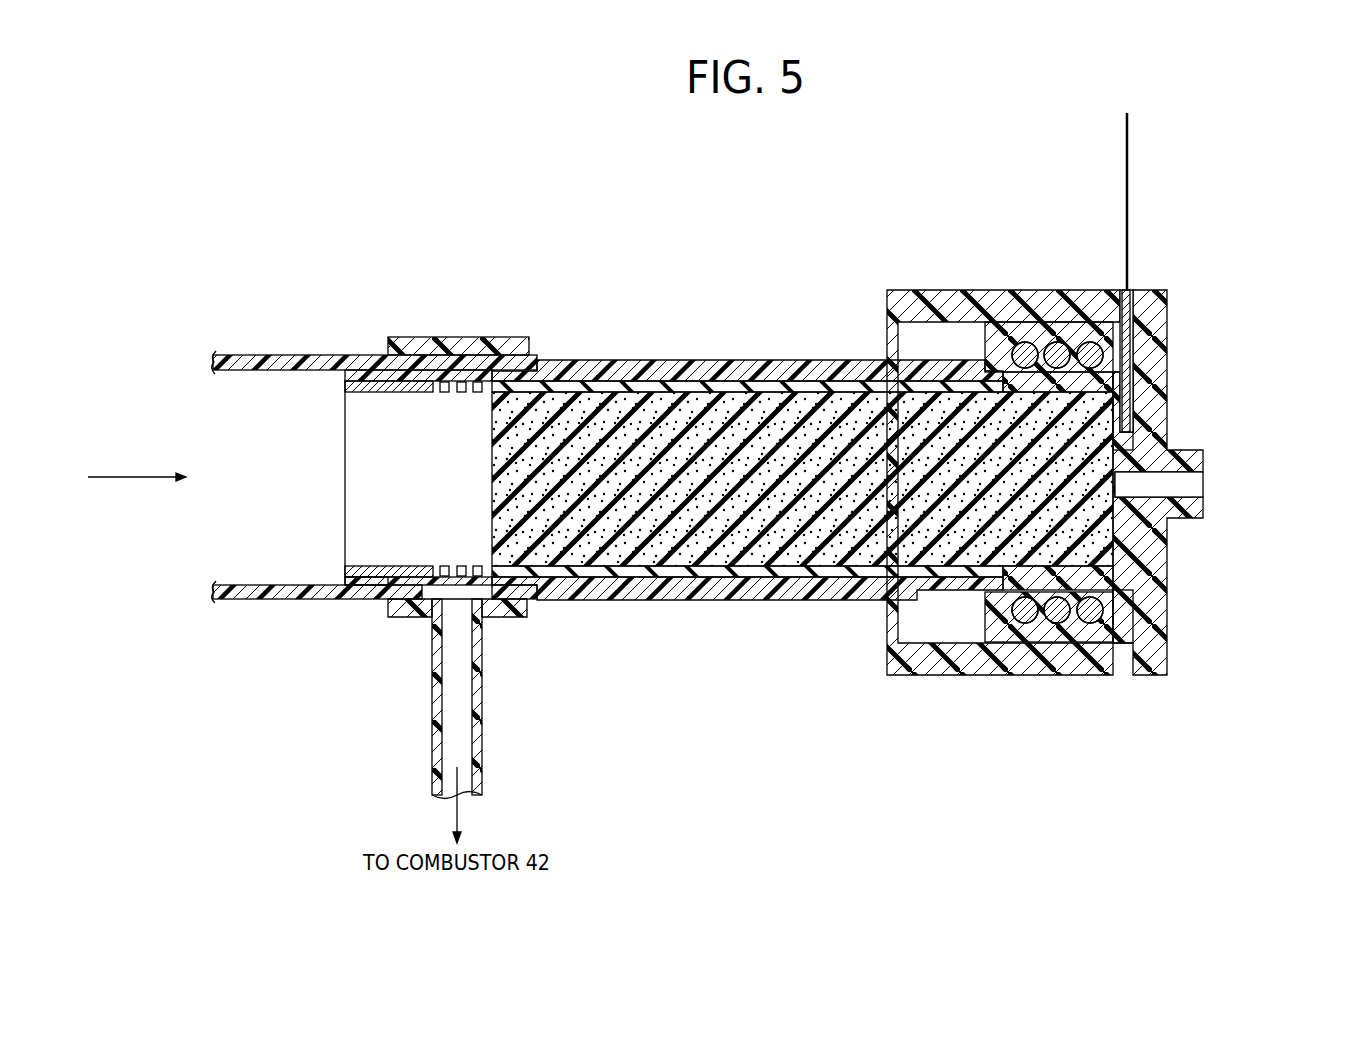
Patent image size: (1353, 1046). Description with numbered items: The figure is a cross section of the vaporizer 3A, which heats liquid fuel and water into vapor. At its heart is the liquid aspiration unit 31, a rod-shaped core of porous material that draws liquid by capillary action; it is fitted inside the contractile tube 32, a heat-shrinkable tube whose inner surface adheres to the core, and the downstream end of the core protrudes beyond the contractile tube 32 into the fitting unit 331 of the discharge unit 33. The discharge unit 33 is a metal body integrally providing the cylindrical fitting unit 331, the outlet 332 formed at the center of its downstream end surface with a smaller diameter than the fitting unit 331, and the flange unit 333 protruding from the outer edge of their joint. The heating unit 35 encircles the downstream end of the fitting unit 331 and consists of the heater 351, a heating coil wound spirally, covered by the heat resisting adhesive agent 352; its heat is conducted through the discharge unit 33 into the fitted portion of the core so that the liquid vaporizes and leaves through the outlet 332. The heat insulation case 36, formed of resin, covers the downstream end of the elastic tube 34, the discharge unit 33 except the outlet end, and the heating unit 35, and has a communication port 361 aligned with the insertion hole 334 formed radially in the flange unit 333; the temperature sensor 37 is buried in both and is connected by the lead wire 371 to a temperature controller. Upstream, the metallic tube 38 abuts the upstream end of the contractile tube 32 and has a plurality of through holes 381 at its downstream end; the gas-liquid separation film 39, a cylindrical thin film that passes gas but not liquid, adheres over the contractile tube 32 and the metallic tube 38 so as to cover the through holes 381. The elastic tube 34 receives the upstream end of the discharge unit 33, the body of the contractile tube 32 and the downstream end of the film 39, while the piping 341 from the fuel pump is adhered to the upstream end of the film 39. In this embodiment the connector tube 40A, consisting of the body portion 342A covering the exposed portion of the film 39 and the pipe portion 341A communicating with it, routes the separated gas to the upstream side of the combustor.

The vaporizer 3A is at (750, 185).
The liquid aspiration unit 31 is at (790, 558).
The contractile tube 32 is at (703, 574).
The discharge unit 33 is at (1166, 482).
The fitting unit 331 is at (1023, 573).
The outlet 332 is at (1197, 485).
The flange unit 333 is at (1192, 626).
The insertion hole 334 is at (1133, 400).
The elastic tube 34 is at (606, 358).
The piping 341 is at (388, 353).
The pipe portion 341A is at (483, 764).
The body portion 342A is at (455, 336).
The heating unit 35 is at (1047, 417).
The heater 351 is at (1058, 344).
The heat resisting adhesive agent 352 is at (1003, 335).
The heat insulation case 36 is at (946, 668).
The communication port 361 is at (1137, 311).
The temperature sensor 37 is at (1137, 350).
The lead wire 371 is at (1129, 197).
The metallic tube 38 is at (367, 564).
The through holes 381 is at (437, 564).
The gas-liquid separation film 39 is at (353, 586).
The connector tube 40A is at (590, 688).